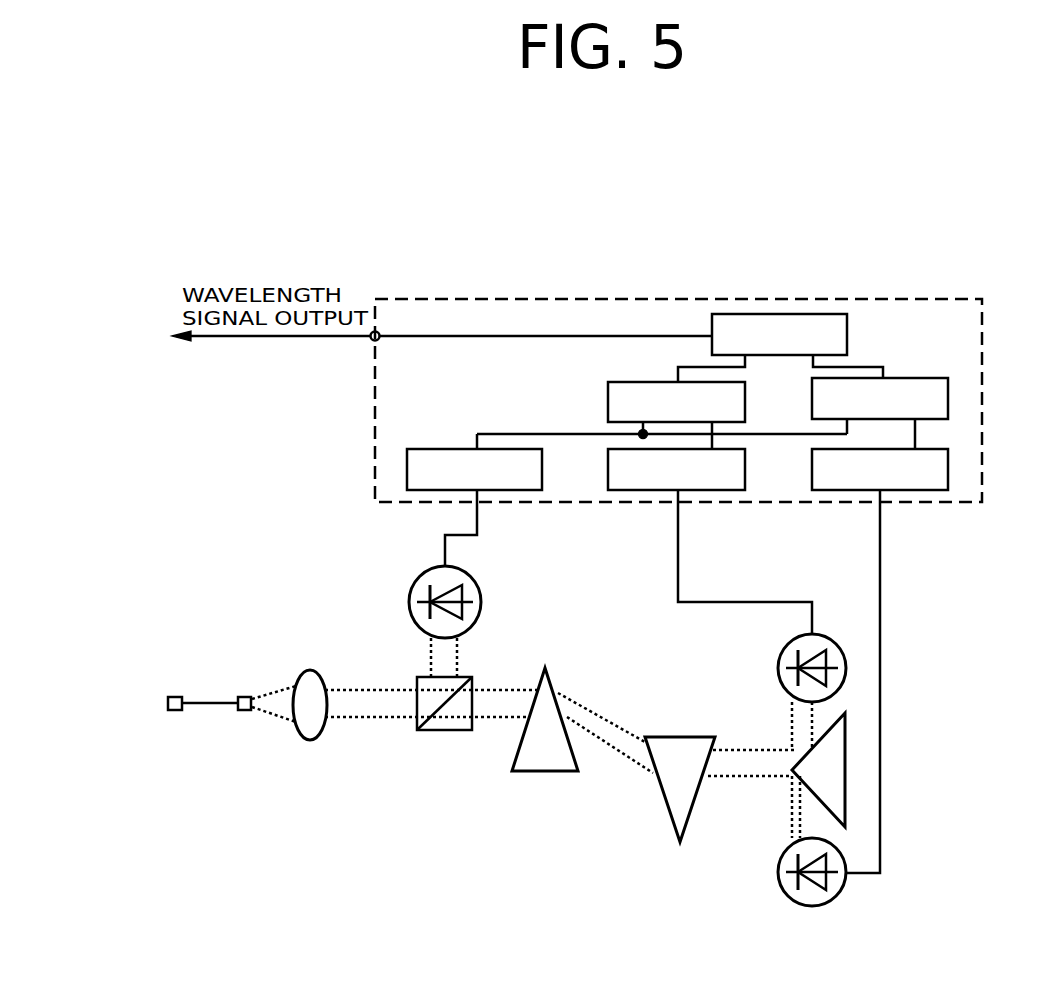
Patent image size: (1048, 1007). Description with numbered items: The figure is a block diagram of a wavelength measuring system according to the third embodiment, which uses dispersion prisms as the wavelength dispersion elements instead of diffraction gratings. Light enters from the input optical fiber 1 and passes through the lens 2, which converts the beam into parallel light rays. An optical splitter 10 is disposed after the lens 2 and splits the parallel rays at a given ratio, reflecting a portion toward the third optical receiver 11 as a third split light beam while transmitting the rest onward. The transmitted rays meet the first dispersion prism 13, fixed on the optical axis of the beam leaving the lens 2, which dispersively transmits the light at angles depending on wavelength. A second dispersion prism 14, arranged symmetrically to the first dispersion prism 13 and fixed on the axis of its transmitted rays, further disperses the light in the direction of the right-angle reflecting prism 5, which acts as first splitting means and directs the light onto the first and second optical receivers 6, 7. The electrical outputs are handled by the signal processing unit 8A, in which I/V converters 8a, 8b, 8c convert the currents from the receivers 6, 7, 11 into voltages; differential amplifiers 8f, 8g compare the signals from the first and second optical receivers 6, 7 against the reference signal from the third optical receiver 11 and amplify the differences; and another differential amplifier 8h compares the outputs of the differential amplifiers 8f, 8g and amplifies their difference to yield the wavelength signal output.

The input optical fiber 1 is at (205, 704).
The lens 2 is at (305, 680).
The right-angle reflecting prism 5 is at (835, 770).
The first optical receiver 6 is at (847, 668).
The second optical receiver 7 is at (836, 897).
The signal processing unit 8A is at (930, 299).
The I/V converter 8a is at (628, 490).
The I/V converter 8b is at (907, 490).
The I/V converter 8c is at (525, 490).
The differential amplifier 8f is at (745, 400).
The differential amplifier 8g is at (948, 398).
The differential amplifier 8h is at (780, 314).
The optical splitter 10 is at (432, 724).
The third optical receiver 11 is at (410, 597).
The first dispersion prism 13 is at (535, 762).
The second dispersion prism 14 is at (670, 740).